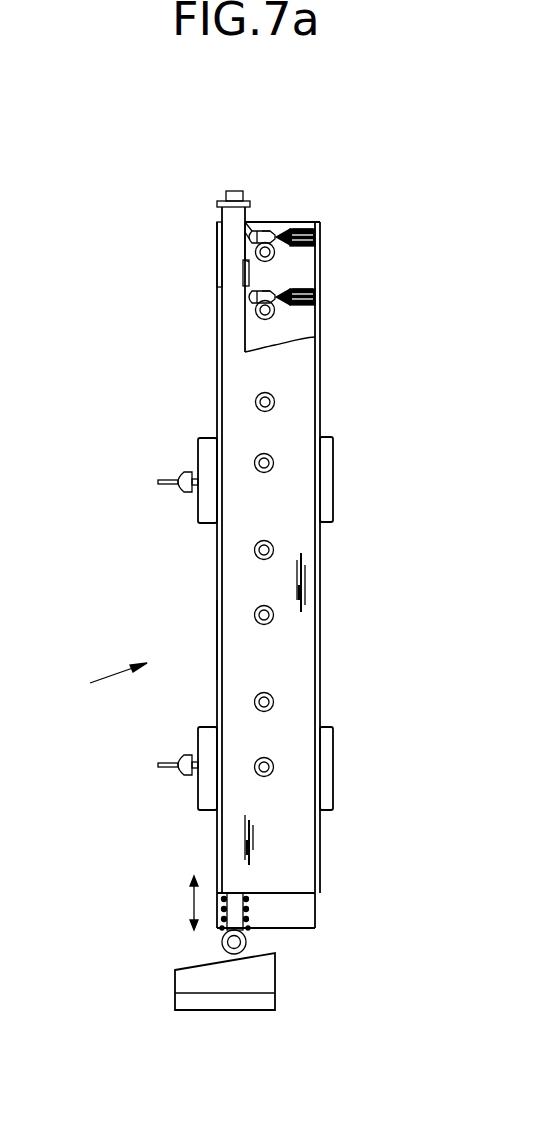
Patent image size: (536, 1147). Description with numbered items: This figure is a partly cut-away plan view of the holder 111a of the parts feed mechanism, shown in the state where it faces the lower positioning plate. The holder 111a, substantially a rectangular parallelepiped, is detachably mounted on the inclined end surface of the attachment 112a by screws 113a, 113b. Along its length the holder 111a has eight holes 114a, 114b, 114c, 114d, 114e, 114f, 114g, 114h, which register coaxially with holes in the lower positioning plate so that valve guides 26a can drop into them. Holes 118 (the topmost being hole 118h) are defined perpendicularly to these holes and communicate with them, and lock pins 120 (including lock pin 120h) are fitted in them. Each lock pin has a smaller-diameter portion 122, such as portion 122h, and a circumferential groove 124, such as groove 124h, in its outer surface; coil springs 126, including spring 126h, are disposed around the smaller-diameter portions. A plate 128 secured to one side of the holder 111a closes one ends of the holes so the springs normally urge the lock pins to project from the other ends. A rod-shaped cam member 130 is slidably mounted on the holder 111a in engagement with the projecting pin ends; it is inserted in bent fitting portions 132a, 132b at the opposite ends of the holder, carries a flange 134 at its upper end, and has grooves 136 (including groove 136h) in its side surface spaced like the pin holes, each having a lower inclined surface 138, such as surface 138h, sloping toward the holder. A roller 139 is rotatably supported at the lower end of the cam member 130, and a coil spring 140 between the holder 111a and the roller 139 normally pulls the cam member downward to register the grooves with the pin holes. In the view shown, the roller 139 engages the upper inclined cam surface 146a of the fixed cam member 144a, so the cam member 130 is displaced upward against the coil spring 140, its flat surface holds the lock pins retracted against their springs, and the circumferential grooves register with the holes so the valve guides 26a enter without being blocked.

The holder 111a is at (97, 679).
The attachment 112a is at (233, 550).
The screw 113a is at (172, 768).
The screw 113b is at (172, 483).
The hole 114a is at (270, 775).
The hole 114b is at (275, 702).
The hole 114c is at (273, 622).
The hole 114d is at (275, 550).
The hole 114e is at (274, 463).
The hole 114f is at (258, 410).
The hole 114g is at (270, 320).
The hole 114h is at (273, 258).
The hole 118h is at (275, 248).
The holes 118 is at (288, 292).
The lock pin 120h is at (284, 230).
The lock pins 120 is at (253, 296).
The smaller-diameter portion 122h is at (306, 238).
The smaller-diameter portions 122 is at (300, 303).
The circumferential groove 124h is at (266, 228).
The circumferential grooves 124 is at (295, 308).
The coil spring 126h is at (300, 223).
The coil springs 126 is at (310, 306).
The plate 128 is at (305, 618).
The cam member 130 is at (238, 334).
The fitting portion 132a is at (216, 240).
The fitting portion 132b is at (216, 640).
The flange 134 is at (220, 200).
The groove 136h is at (247, 228).
The grooves 136 is at (246, 265).
The inclined surface 138h is at (247, 233).
The inclined surfaces 138 is at (245, 284).
The roller 139 is at (250, 944).
The coil spring 140 is at (262, 910).
The fixed cam member 144a is at (232, 1005).
The cam surface 146a is at (185, 965).
The valve guide 26a is at (260, 777).